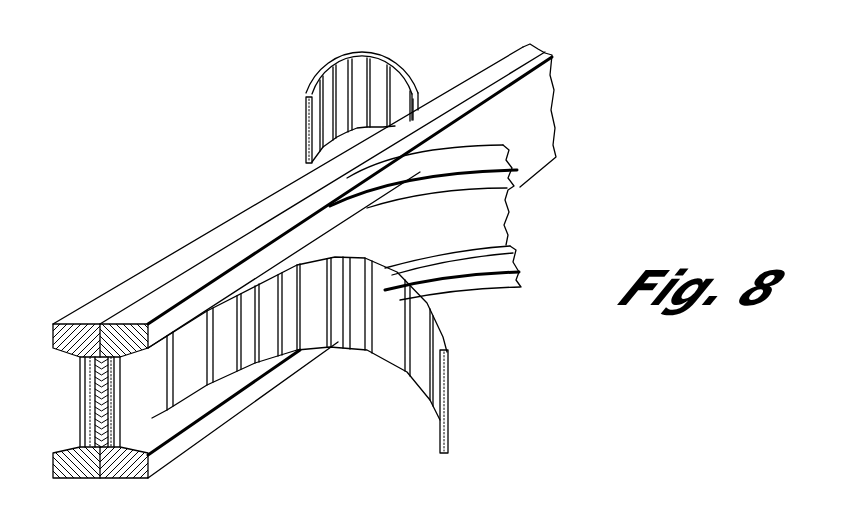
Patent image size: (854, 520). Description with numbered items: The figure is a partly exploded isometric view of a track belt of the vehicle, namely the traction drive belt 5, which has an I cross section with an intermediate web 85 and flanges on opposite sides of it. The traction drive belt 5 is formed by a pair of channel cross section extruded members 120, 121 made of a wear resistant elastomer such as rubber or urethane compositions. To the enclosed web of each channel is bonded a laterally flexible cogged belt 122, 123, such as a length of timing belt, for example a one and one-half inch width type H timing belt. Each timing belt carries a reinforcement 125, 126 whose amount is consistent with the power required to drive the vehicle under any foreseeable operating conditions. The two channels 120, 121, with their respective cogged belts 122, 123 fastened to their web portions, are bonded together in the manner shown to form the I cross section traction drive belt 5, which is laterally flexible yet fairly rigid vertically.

The traction drive belt 5 is at (485, 66).
The web 85 is at (495, 215).
The channel cross section extruded member 120 is at (158, 305).
The channel cross section extruded member 121 is at (103, 305).
The cogged belt 122 is at (410, 358).
The cogged belt 123 is at (343, 70).
The reinforcement 125 is at (448, 413).
The reinforcement 126 is at (306, 125).